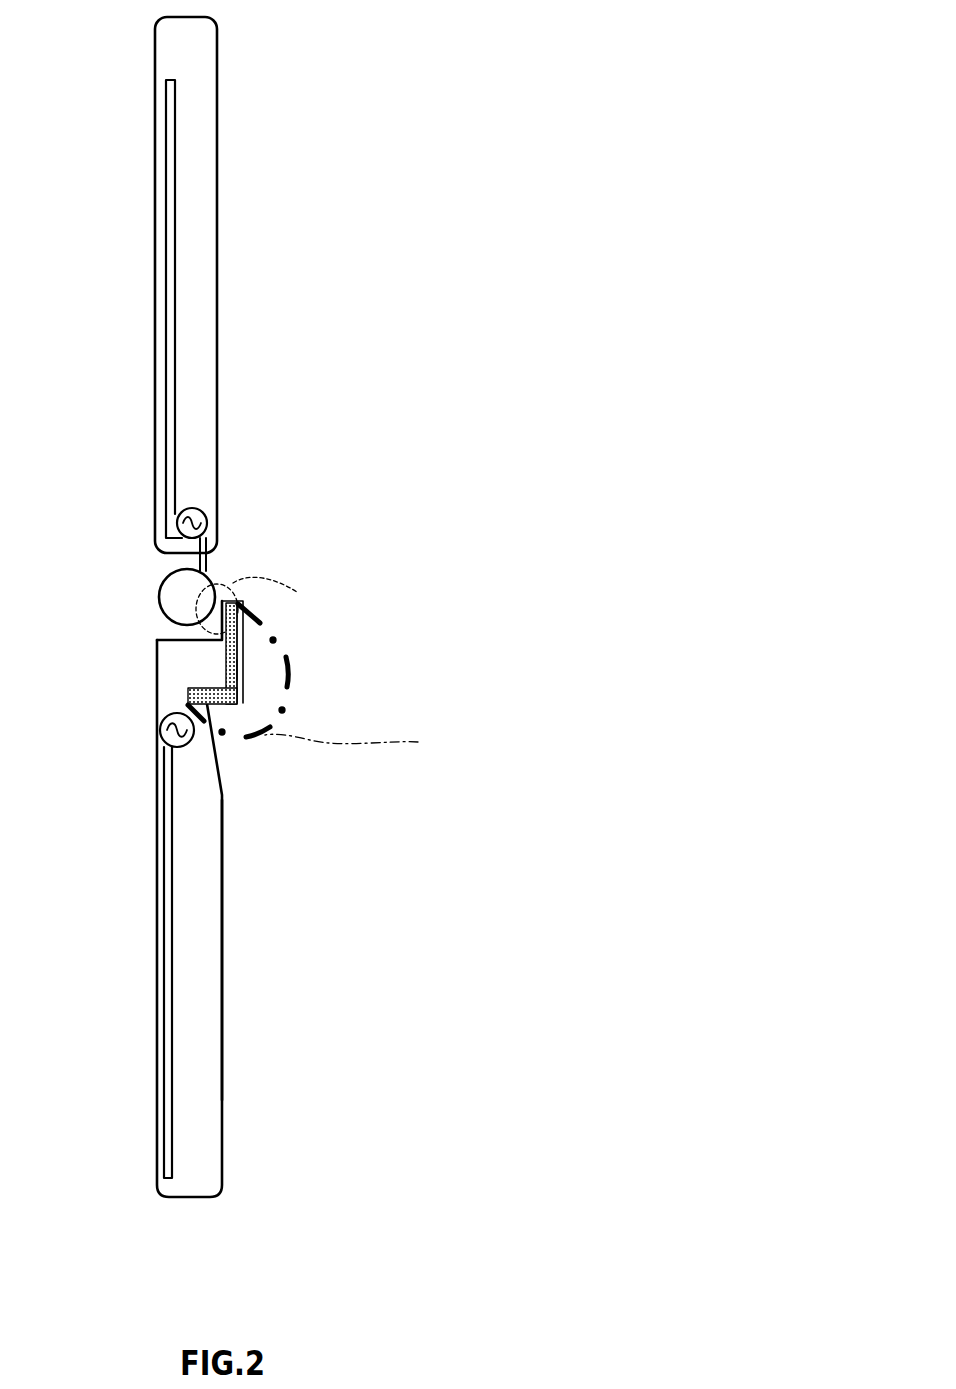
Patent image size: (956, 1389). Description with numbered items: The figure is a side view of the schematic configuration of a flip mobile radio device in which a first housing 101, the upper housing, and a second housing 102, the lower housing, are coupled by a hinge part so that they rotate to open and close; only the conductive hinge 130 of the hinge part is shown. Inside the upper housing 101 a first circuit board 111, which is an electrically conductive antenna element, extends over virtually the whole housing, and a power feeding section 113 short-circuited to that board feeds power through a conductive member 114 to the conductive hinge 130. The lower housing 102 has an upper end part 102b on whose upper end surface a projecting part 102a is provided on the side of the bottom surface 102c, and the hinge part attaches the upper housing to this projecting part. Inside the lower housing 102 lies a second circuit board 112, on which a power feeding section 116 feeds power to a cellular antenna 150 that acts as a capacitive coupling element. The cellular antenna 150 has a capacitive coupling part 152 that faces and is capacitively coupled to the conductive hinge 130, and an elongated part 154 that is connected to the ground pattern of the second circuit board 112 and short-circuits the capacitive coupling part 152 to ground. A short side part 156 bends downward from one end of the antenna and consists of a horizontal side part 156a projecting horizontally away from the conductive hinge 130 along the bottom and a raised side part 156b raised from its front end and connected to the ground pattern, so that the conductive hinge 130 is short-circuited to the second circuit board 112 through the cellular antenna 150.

The first housing 101 is at (205, 60).
The first circuit board 111 is at (168, 147).
The power feeding section 113 is at (200, 506).
The conductive member 114 is at (207, 558).
The conductive hinge 130 is at (205, 585).
The capacitive coupling part 152 is at (222, 624).
The second housing 102 is at (210, 1066).
The projecting part 102a is at (240, 633).
The upper end part 102b is at (215, 640).
The bottom surface 102c is at (222, 958).
The cellular antenna 150 is at (238, 686).
The elongated part 154 is at (240, 674).
The power feeding section 116 is at (160, 720).
The second circuit board 112 is at (167, 913).
The short side part 156 is at (295, 717).
The horizontal side part 156a is at (245, 738).
The raised side part 156b is at (242, 703).